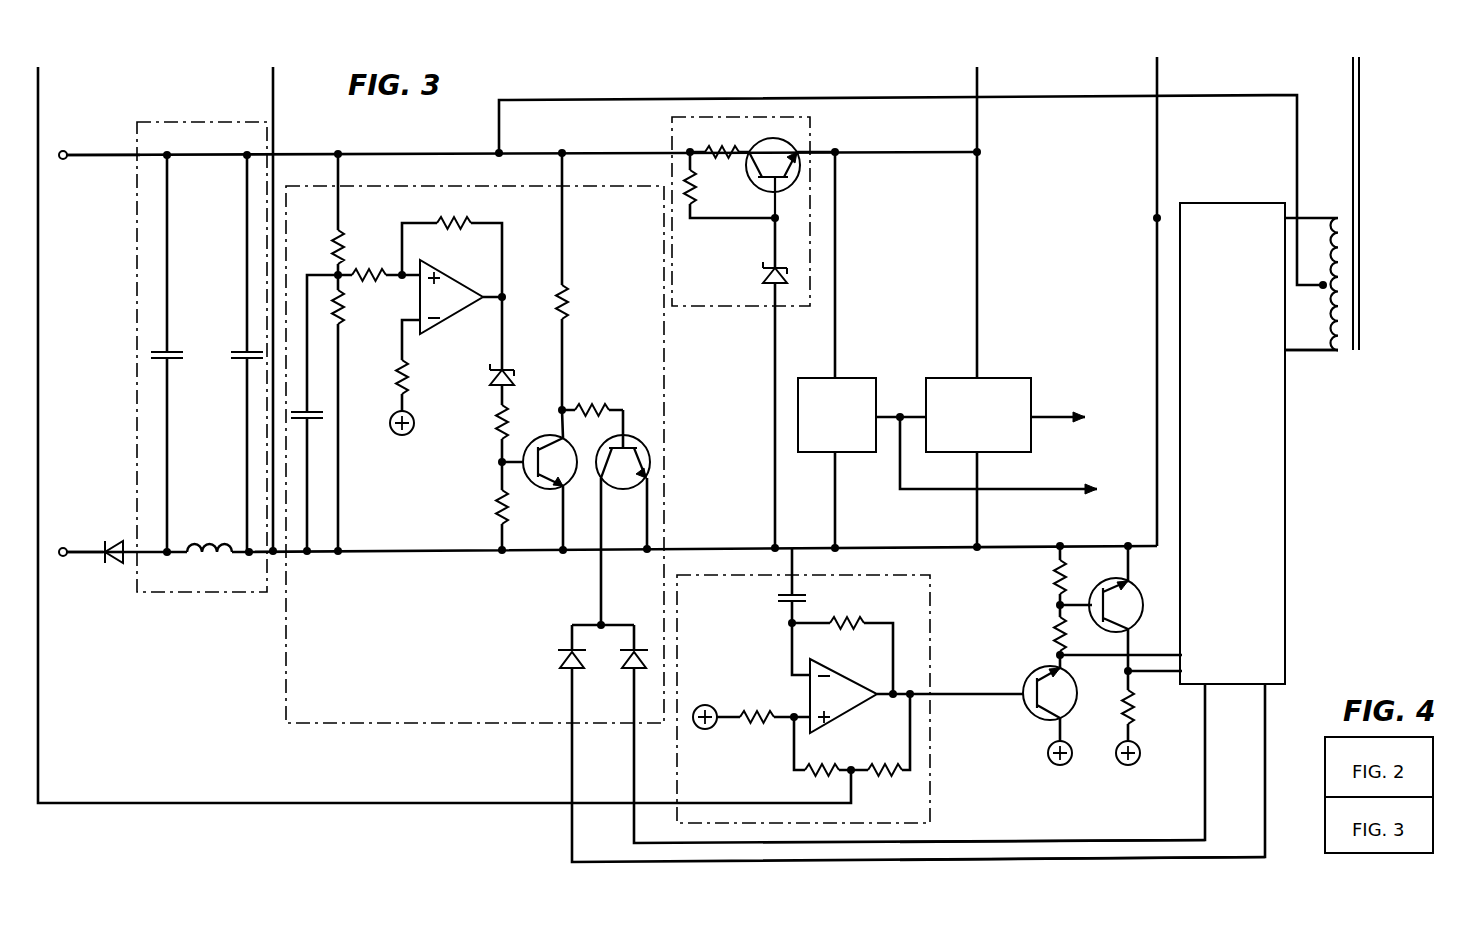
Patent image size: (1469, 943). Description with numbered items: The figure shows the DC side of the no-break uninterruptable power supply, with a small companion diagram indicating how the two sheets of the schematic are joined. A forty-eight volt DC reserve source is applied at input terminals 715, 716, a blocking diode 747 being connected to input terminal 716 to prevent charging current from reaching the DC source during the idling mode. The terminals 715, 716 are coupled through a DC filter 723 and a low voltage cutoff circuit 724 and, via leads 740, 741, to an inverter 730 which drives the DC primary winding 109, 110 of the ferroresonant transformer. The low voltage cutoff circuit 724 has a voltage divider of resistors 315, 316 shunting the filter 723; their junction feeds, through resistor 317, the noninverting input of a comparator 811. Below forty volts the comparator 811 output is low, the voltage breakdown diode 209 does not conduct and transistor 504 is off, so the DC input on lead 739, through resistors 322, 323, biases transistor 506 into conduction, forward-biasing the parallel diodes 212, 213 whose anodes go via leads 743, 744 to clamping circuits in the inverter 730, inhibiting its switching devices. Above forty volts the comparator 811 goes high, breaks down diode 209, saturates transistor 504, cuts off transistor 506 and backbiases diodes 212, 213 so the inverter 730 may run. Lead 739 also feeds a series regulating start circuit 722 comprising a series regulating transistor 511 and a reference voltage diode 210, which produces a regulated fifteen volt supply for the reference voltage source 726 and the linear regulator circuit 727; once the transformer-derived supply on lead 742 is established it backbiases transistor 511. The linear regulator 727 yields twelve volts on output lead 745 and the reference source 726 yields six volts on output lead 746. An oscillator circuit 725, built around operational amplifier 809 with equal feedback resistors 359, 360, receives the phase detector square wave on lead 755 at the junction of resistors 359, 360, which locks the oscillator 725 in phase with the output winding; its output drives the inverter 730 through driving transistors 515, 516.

The input terminal 715 is at (92, 155).
The input terminal 716 is at (82, 558).
The blocking diode 747 is at (113, 540).
The lead 755 is at (40, 397).
The DC filter 723 is at (190, 592).
The low voltage cutoff circuit 724 is at (365, 723).
The resistor 315 is at (347, 243).
The resistor 316 is at (350, 318).
The resistor 317 is at (371, 284).
The comparator 811 is at (450, 283).
The voltage breakdown diode 209 is at (490, 377).
The resistor 322 is at (578, 301).
The resistor 323 is at (597, 398).
The transistor 504 is at (560, 488).
The transistor 506 is at (650, 462).
The diode 212 is at (560, 661).
The diode 213 is at (627, 661).
The lead 739 is at (528, 152).
The lead 740 is at (594, 102).
The lead 741 is at (387, 554).
The lead 742 is at (980, 131).
The series regulating start circuit 722 is at (811, 128).
The series regulating transistor 511 is at (752, 180).
The reference voltage diode 210 is at (760, 277).
The reference voltage source 726 is at (858, 378).
The linear regulator circuit 727 is at (1007, 378).
The output lead 745 is at (1056, 415).
The output lead 746 is at (1031, 490).
The inverter 730 is at (1233, 203).
The DC primary winding 109 is at (1337, 203).
The DC primary winding 110 is at (1318, 362).
The oscillator circuit 725 is at (930, 594).
The operational amplifier 809 is at (842, 680).
The resistor 359 is at (810, 775).
The resistor 360 is at (875, 775).
The driving transistor 515 is at (1027, 673).
The driving transistor 516 is at (1101, 589).
The lead 743 is at (948, 860).
The lead 744 is at (1035, 843).